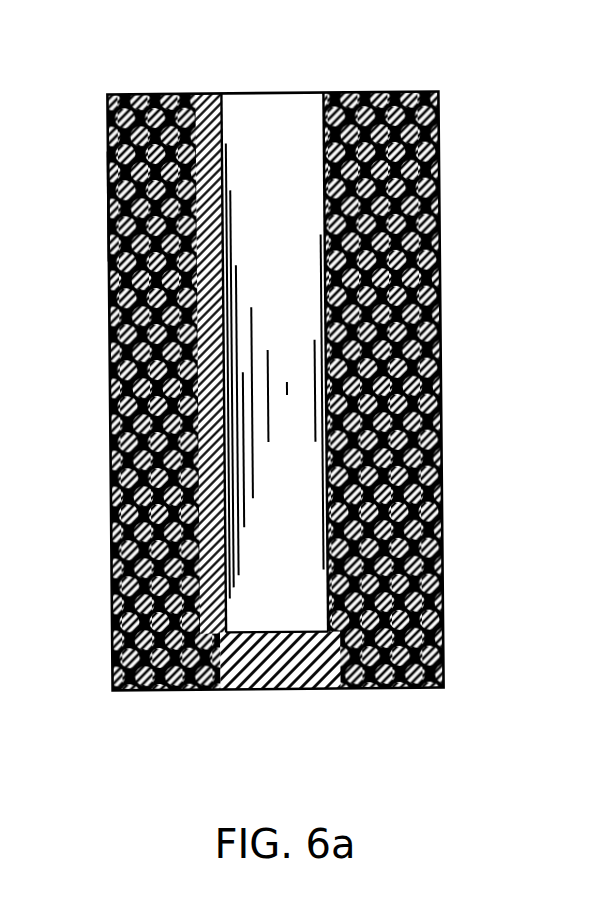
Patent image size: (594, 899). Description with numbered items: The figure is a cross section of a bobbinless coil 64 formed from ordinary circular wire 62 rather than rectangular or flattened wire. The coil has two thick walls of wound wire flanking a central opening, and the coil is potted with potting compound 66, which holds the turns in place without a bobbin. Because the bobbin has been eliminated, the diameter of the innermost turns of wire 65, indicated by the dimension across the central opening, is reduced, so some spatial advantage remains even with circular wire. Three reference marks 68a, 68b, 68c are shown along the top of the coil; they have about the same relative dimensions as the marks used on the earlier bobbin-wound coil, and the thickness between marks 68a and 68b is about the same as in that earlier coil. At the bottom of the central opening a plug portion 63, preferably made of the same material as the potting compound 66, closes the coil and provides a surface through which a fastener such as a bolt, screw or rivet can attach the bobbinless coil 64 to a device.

The circular wire 62 is at (326, 163).
The plug portion 63 is at (218, 703).
The bobbinless coil 64 is at (457, 102).
The innermost turns of wire 65 is at (324, 127).
The potting compound 66 is at (110, 205).
The reference mark 68a is at (103, 86).
The reference mark 68b is at (203, 86).
The reference mark 68c is at (346, 86).